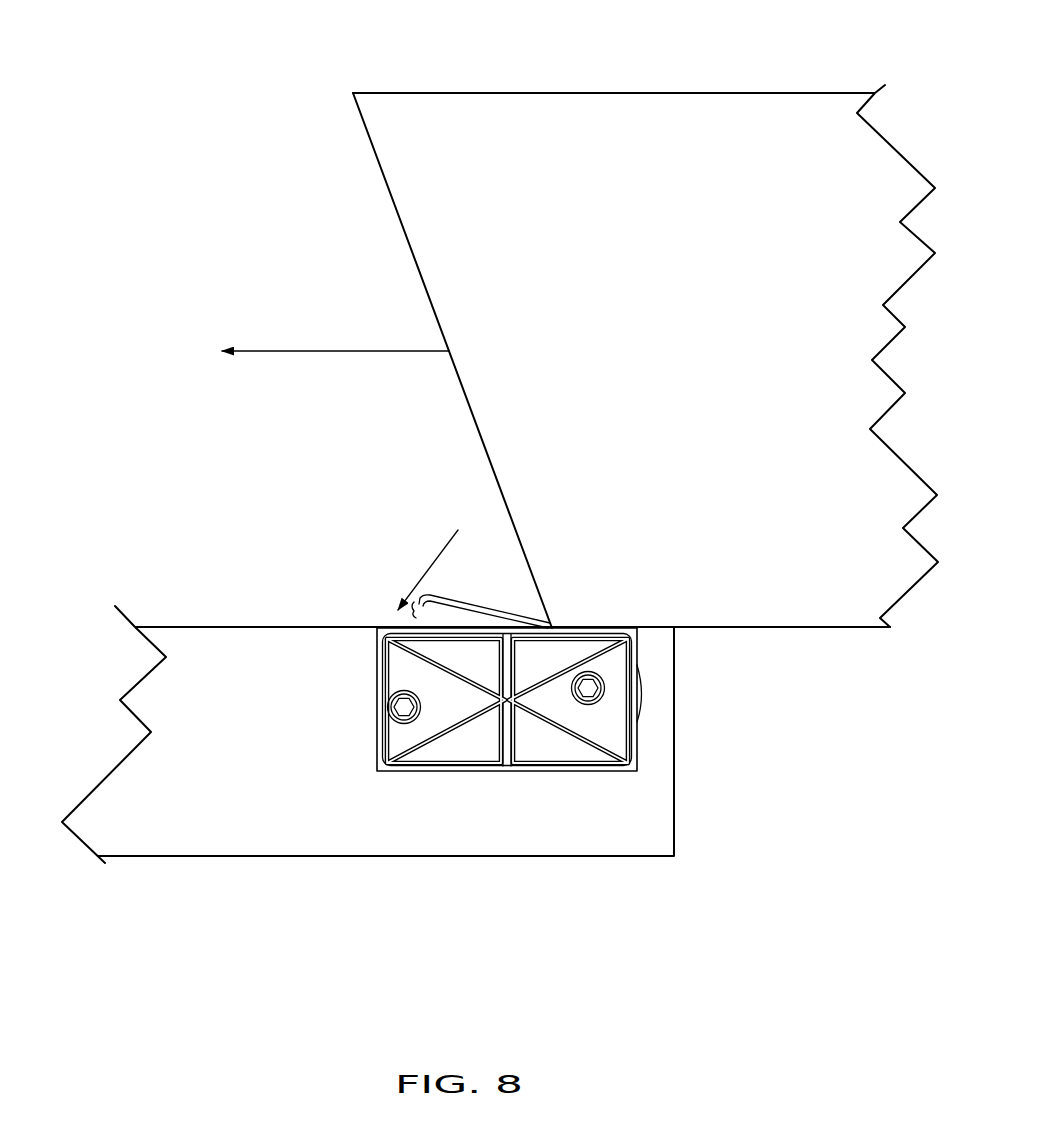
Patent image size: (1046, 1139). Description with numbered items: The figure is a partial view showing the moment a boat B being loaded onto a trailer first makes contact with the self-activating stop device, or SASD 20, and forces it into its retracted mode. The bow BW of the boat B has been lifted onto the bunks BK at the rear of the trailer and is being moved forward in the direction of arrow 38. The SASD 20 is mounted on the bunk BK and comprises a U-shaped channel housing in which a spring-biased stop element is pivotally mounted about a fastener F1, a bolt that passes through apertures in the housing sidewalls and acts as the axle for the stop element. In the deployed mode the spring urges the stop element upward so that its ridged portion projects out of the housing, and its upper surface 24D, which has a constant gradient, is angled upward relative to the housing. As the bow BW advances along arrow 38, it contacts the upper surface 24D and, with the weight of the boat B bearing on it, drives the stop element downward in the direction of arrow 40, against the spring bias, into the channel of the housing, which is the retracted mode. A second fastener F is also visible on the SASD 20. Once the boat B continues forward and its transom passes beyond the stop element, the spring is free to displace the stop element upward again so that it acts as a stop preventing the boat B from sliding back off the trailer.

The boat B is at (692, 84).
The bow BW is at (382, 175).
The bunks BK is at (632, 820).
The SASD 20 is at (535, 792).
The upper surface 24D is at (482, 598).
The fastener F is at (398, 732).
The fastener F1 is at (618, 686).
The arrow 38 is at (323, 350).
The arrow 40 is at (427, 560).